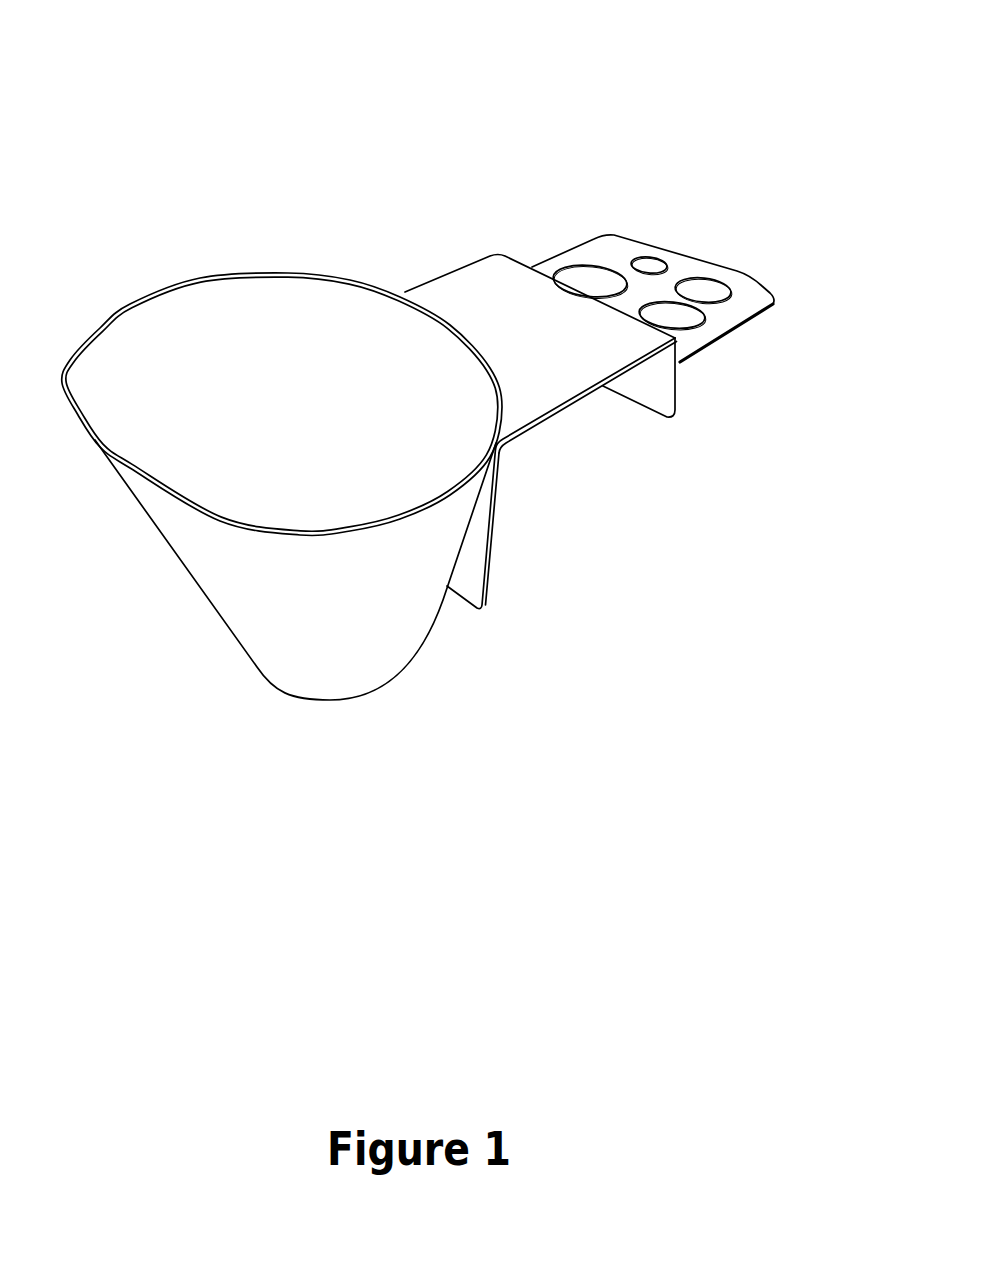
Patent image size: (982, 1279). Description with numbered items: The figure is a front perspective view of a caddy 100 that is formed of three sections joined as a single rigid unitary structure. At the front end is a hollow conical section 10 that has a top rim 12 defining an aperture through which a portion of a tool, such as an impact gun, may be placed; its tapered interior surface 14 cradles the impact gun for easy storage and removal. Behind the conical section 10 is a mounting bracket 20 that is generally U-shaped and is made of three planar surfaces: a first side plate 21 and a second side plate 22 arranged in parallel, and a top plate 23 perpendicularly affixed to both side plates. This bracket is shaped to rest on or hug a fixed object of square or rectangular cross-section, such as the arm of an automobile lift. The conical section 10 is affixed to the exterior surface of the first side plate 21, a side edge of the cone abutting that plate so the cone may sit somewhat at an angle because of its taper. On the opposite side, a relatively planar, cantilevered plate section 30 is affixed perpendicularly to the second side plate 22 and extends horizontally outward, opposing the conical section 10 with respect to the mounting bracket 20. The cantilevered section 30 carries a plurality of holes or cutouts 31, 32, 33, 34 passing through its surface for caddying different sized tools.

The conical section 10 is at (283, 605).
The top rim 12 is at (135, 302).
The tapered interior surface 14 is at (298, 350).
The mounting bracket 20 is at (448, 260).
The first side plate 21 is at (478, 545).
The second side plate 22 is at (674, 412).
The top plate 23 is at (553, 417).
The cantilevered plate section 30 is at (749, 291).
The hole/cutout 31 is at (650, 262).
The hole/cutout 32 is at (722, 290).
The hole/cutout 33 is at (686, 330).
The hole/cutout 34 is at (588, 282).
The caddy 100 is at (43, 712).